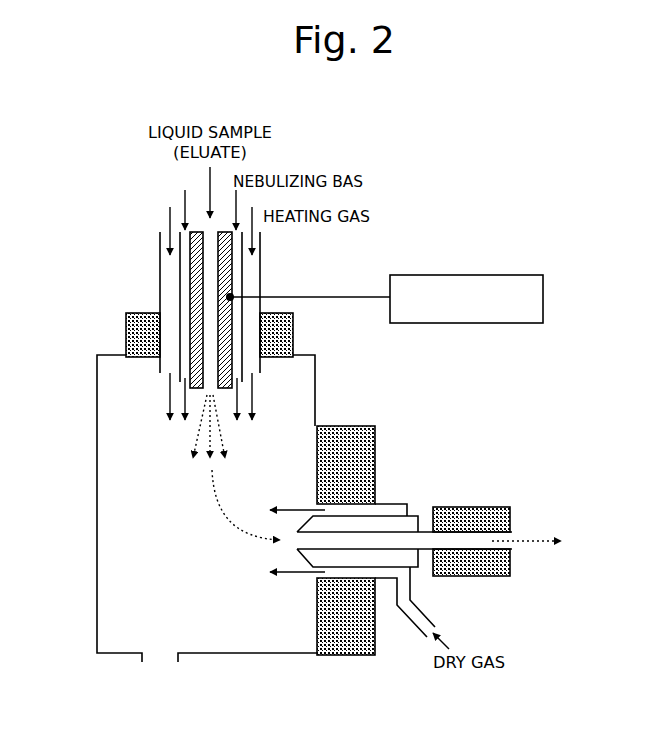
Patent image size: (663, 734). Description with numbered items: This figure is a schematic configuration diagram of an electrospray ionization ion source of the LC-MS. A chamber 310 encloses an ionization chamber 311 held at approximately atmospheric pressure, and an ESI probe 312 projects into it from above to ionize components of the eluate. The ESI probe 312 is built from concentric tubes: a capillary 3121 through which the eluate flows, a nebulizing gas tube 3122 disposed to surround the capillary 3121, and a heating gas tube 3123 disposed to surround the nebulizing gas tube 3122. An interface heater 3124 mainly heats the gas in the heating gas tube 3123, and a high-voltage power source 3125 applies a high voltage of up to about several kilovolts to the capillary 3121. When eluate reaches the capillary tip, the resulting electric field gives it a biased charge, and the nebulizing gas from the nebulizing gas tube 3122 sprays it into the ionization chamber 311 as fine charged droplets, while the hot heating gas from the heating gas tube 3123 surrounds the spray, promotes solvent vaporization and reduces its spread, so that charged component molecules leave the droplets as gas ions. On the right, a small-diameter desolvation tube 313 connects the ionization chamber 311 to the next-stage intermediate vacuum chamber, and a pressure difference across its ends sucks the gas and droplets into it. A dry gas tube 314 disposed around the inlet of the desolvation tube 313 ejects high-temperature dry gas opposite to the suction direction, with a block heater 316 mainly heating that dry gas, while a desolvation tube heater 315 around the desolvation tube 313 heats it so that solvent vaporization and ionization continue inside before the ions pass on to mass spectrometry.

The chamber 310 is at (97, 422).
The ionization chamber 311 is at (126, 504).
The ESI probe 312 is at (195, 309).
The capillary 3121 is at (192, 272).
The nebulizing gas tube 3122 is at (182, 290).
The heating gas tube 3123 is at (261, 277).
The interface heater 3124 is at (294, 338).
The high-voltage power source 3125 is at (543, 292).
The desolvation tube 313 is at (366, 537).
The dry gas tube 314 is at (350, 570).
The desolvation tube heater 315 is at (476, 507).
The block heater 316 is at (364, 426).